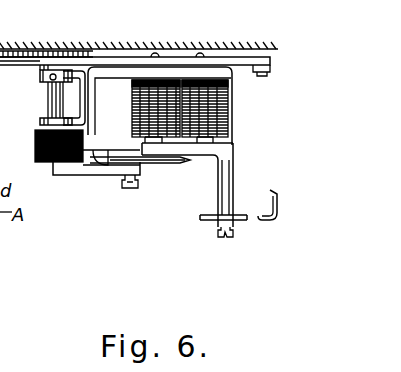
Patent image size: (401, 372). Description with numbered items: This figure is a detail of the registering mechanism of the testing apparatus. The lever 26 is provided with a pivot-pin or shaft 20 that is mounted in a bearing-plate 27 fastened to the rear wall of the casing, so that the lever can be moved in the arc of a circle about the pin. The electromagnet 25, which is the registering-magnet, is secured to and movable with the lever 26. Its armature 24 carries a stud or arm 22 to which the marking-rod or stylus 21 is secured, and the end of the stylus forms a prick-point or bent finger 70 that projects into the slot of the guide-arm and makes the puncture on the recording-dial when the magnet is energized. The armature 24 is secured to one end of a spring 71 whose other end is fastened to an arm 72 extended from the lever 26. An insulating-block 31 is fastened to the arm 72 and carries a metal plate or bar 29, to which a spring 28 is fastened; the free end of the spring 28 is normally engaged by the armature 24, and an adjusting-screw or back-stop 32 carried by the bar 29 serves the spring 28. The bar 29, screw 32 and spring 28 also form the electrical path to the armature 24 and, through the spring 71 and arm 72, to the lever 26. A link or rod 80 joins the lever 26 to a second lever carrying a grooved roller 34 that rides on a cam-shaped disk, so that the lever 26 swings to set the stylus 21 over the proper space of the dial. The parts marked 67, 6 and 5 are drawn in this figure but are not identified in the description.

The lever 26 is at (110, 64).
The bearing-plate 27 is at (38, 64).
The pivot-pin or shaft 20 is at (47, 99).
The link or rod 80 is at (44, 100).
The insulating-block 31 is at (35, 143).
The arm 72 is at (90, 120).
The spring 71 is at (125, 143).
The electromagnet 25 is at (230, 115).
The armature 24 is at (197, 157).
The stud or arm 22 is at (218, 185).
The marking-rod or stylus 21 is at (199, 219).
The metal plate or bar 29 is at (97, 173).
The adjusting-screw or back-stop 32 is at (130, 184).
The spring 28 is at (150, 173).
The prick-point or bent finger 70 is at (270, 200).
The grooved roller 34 is at (13, 288).
The member 67 is at (0, 318).
The member 6 is at (0, 345).
The member 5 is at (0, 370).